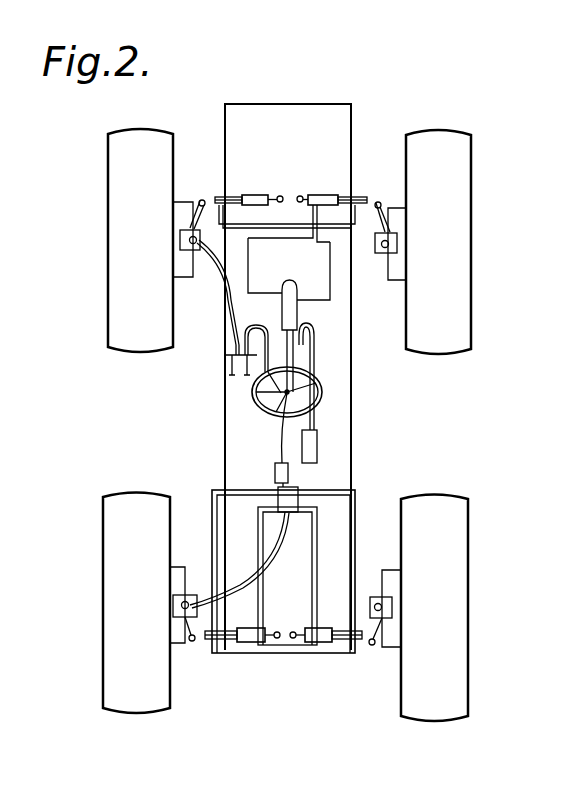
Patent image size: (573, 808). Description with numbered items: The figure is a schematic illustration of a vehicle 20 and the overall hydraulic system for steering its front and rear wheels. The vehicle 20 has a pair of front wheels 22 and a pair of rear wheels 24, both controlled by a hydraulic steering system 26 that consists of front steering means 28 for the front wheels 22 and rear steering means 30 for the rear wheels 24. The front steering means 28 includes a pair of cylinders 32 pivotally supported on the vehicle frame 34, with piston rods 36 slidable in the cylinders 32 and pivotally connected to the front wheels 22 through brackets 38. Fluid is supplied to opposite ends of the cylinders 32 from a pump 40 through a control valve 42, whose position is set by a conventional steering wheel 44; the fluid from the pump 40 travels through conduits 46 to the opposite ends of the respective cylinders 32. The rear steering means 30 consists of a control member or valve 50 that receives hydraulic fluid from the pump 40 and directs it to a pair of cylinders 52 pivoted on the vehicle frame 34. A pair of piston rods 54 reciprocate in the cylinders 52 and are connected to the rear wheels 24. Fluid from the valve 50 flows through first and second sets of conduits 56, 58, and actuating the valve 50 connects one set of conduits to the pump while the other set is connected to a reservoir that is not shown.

The vehicle 20 is at (224, 86).
The front wheels 22 is at (125, 200).
The rear wheels 24 is at (118, 530).
The hydraulic steering system 26 is at (298, 145).
The front steering means 28 is at (275, 179).
The rear steering means 30 is at (335, 463).
The cylinders 32 is at (239, 194).
The vehicle frame 34 is at (339, 109).
The piston rods 36 is at (214, 197).
The brackets 38 is at (200, 201).
The pump 40 is at (318, 437).
The control valve 42 is at (300, 310).
The steering wheel 44 is at (252, 394).
The conduits 46 is at (315, 262).
The control member or valve 50 is at (271, 491).
The cylinders 52 is at (312, 648).
The piston rods 54 is at (236, 647).
The first set of conduits 56 is at (211, 515).
The second set of conduits 58 is at (358, 520).